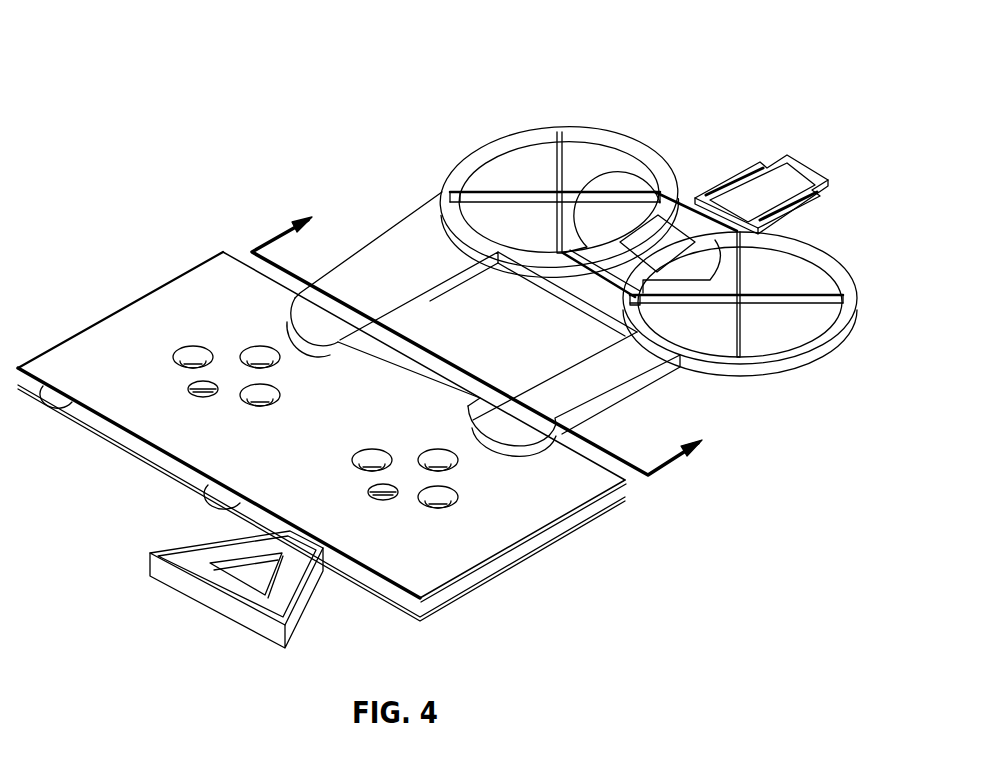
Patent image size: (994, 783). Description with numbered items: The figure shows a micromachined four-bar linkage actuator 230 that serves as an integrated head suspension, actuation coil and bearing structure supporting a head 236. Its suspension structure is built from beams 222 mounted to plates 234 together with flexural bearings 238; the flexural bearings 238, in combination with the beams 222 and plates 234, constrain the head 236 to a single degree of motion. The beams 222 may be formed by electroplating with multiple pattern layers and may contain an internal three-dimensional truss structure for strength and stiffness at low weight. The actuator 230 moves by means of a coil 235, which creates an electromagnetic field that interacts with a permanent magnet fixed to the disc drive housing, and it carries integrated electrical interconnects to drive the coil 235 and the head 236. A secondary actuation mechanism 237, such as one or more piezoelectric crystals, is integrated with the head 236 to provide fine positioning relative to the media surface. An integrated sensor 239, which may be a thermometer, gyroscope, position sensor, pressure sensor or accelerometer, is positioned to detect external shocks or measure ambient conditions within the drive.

The micromachined four-bar linkage actuator 230 is at (130, 138).
The beams 222 is at (590, 373).
The plates 234 is at (322, 436).
The coil 235 is at (273, 610).
The head 236 is at (797, 177).
The secondary actuation mechanism 237 is at (727, 180).
The flexural bearings 238 is at (470, 157).
The integrated sensor 239 is at (650, 234).